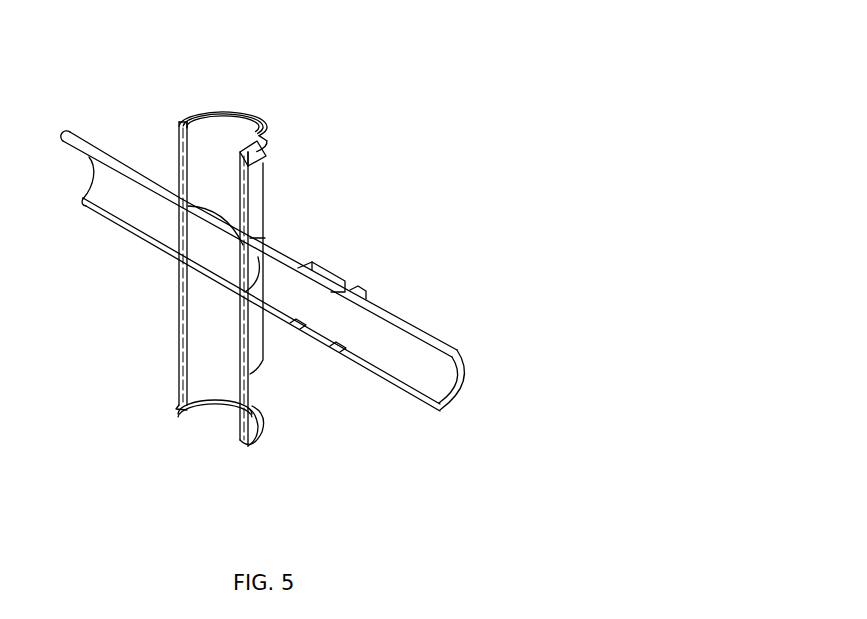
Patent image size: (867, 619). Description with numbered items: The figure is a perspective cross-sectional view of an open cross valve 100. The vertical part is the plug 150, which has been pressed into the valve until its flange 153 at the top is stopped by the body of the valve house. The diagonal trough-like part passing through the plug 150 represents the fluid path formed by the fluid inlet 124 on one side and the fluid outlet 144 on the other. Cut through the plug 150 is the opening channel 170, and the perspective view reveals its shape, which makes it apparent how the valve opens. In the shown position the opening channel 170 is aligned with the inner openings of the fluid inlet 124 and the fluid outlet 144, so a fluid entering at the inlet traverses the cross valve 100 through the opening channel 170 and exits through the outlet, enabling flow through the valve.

The cross valve 100 is at (527, 93).
The fluid inlet 124 is at (297, 267).
The fluid outlet 144 is at (190, 246).
The plug 150 is at (252, 404).
The flange 153 is at (270, 123).
The opening channel 170 is at (213, 260).